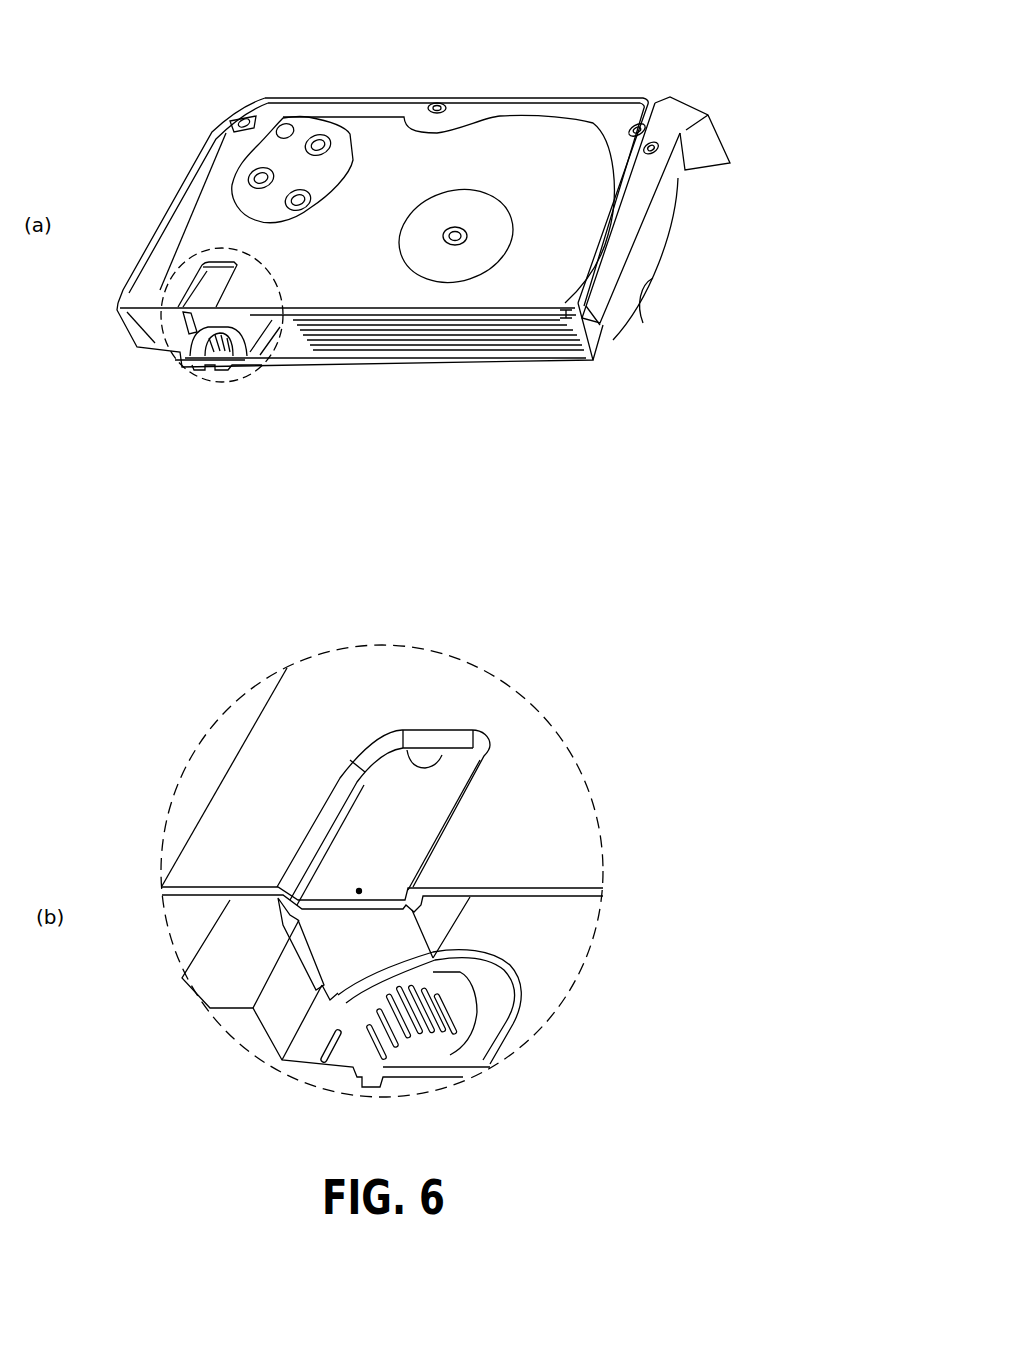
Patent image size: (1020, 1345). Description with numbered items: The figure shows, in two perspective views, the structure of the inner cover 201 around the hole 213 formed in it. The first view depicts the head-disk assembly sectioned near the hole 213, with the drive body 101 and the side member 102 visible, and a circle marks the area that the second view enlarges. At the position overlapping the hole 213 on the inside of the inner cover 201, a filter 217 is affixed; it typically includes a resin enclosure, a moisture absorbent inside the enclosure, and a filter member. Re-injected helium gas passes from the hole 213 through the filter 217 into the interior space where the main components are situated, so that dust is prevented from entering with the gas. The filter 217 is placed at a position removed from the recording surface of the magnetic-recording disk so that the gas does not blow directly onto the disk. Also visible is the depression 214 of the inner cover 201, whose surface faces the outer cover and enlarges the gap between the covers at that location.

The hard disk drive 101 is at (547, 343).
The inner cover 102 is at (605, 345).
The inner cover 201 is at (603, 120).
The hole 213 is at (359, 889).
The depression 214 is at (227, 262).
The filter 217 is at (433, 933).